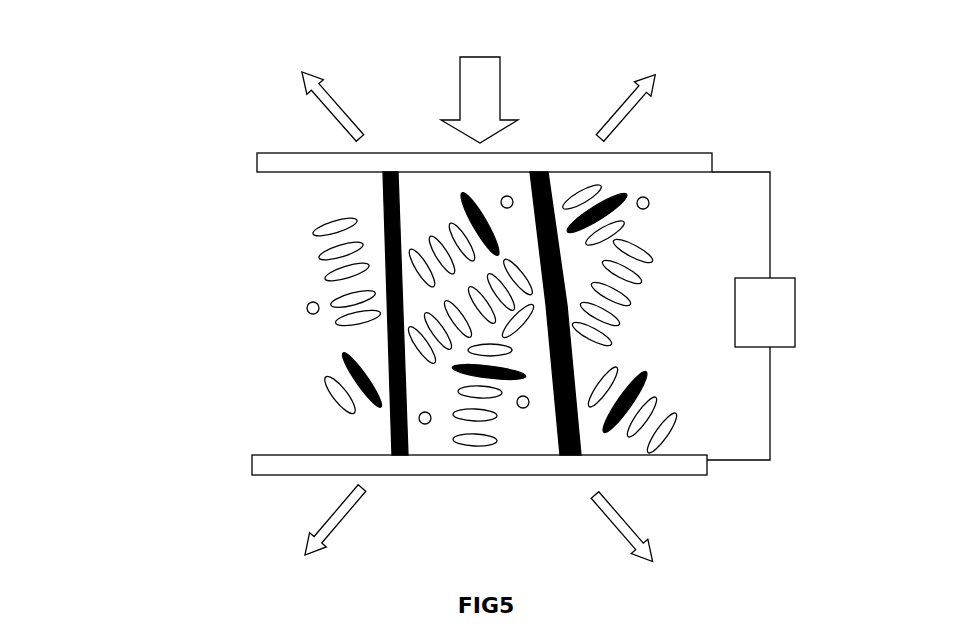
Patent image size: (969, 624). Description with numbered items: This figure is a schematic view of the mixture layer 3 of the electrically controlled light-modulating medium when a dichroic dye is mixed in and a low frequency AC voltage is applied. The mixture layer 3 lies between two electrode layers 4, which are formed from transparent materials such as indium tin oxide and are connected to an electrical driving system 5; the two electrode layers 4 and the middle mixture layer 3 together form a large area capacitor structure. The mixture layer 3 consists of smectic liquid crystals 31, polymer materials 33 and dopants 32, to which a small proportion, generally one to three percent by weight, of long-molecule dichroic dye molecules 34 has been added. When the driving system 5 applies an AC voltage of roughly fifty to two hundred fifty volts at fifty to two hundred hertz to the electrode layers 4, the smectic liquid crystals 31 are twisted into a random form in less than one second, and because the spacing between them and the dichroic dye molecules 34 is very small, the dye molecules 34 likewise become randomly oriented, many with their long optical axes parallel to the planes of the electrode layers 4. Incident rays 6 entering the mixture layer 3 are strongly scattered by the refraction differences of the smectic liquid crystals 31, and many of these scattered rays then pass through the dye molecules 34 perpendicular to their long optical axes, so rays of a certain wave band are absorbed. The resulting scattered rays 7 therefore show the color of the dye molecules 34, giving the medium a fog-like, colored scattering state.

The mixture layer 3 is at (172, 299).
The smectic liquid crystals 31 is at (330, 390).
The dopants 32 is at (307, 307).
The polymer materials 33 is at (380, 195).
The dichroic dye molecules 34 is at (343, 353).
The electrode layers 4 is at (257, 160).
The electrical driving system 5 is at (797, 313).
The rays 6 is at (502, 72).
The scattered rays 7 is at (315, 107).